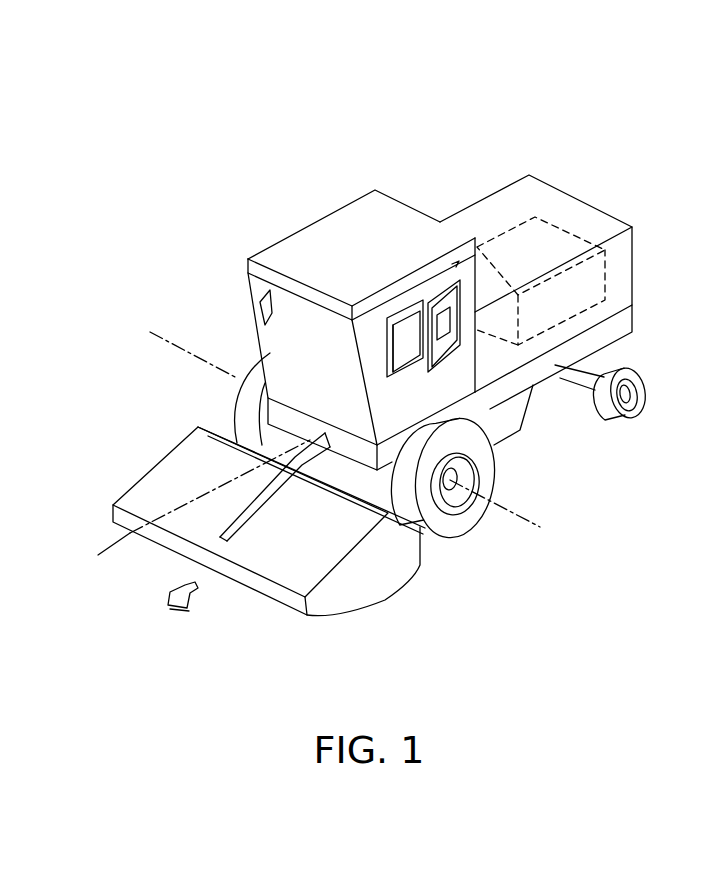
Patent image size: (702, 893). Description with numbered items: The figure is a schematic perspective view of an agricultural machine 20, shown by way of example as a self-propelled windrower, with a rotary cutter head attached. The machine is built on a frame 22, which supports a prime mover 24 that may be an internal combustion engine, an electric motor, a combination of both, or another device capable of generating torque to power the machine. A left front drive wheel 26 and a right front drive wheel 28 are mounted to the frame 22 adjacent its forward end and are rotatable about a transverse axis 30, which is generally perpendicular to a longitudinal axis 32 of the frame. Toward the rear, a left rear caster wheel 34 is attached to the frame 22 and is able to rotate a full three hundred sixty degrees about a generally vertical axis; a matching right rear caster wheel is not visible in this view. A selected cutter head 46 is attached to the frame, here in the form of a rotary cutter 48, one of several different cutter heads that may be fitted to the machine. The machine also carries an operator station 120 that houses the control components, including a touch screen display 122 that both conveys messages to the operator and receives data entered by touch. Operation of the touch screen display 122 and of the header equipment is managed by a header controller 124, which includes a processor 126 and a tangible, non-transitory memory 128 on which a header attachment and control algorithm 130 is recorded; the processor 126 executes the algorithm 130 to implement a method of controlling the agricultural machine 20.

The agricultural machine 20 is at (278, 92).
The frame 22 is at (538, 368).
The prime mover 24 is at (573, 232).
The left front drive wheel 26 is at (445, 525).
The right front drive wheel 28 is at (250, 400).
The transverse axis 30 is at (523, 527).
The longitudinal axis 32 is at (110, 552).
The left rear caster wheel 34 is at (622, 421).
The cutter head 46 is at (264, 597).
The rotary cutter 48 is at (188, 473).
The operator station 120 is at (393, 192).
The touch screen display 122 is at (260, 304).
The header controller 124 is at (397, 357).
The processor 126 is at (385, 332).
The memory 128 is at (443, 345).
The header attachment and control algorithm 130 is at (445, 313).